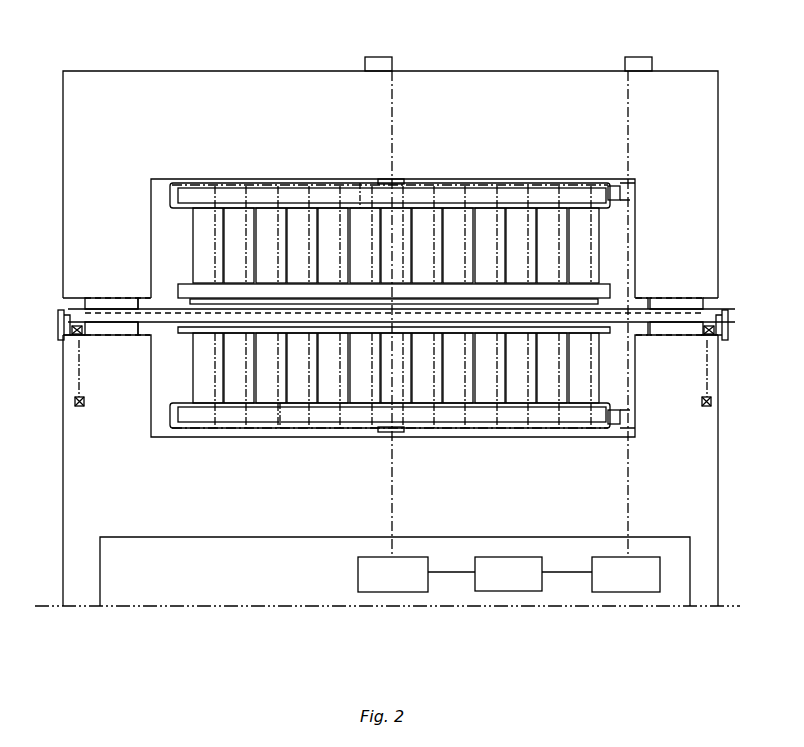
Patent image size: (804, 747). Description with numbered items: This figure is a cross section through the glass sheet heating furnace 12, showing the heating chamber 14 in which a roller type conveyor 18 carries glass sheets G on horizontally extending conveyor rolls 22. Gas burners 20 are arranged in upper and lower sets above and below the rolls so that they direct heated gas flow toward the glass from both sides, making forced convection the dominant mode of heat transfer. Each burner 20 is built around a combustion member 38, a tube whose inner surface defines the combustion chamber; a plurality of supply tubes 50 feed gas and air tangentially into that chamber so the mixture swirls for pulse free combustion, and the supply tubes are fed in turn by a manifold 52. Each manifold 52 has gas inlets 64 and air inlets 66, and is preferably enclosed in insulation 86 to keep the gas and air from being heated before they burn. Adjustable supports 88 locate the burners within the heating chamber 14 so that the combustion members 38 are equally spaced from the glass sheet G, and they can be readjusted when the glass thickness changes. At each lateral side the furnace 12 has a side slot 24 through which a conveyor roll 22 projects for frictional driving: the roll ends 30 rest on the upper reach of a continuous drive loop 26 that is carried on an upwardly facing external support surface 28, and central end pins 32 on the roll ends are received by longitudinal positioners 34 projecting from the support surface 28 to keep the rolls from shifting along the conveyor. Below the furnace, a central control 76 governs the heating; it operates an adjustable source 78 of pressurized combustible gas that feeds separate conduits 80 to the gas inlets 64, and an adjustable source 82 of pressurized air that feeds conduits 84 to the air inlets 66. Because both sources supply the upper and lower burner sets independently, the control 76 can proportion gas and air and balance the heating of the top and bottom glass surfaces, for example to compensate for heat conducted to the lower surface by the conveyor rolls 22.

The glass sheet heating furnace 12 is at (510, 56).
The heating chamber 14 is at (165, 222).
The conveyor 18 is at (195, 302).
The gas burners 20 is at (608, 228).
The conveyor rolls 22 is at (165, 335).
The side slot 24 is at (66, 297).
The drive loop 26 is at (75, 400).
The external support surface 28 is at (75, 338).
The roll ends 30 is at (88, 304).
The central end pins 32 is at (60, 320).
The longitudinal positioners 34 is at (72, 332).
The combustion member 38 is at (610, 293).
The supply tubes 50 is at (236, 212).
The manifold 52 is at (528, 183).
The gas inlets 64 is at (614, 188).
The air inlets 66 is at (400, 180).
The central control 76 is at (533, 580).
The source of pressurized combustible gas 78 is at (652, 580).
The gas conduits 80 is at (636, 57).
The source of pressurized air 82 is at (418, 580).
The air conduits 84 is at (385, 57).
The insulation 86 is at (360, 183).
The adjustable supports 88 is at (200, 183).
The glass sheets G is at (162, 298).